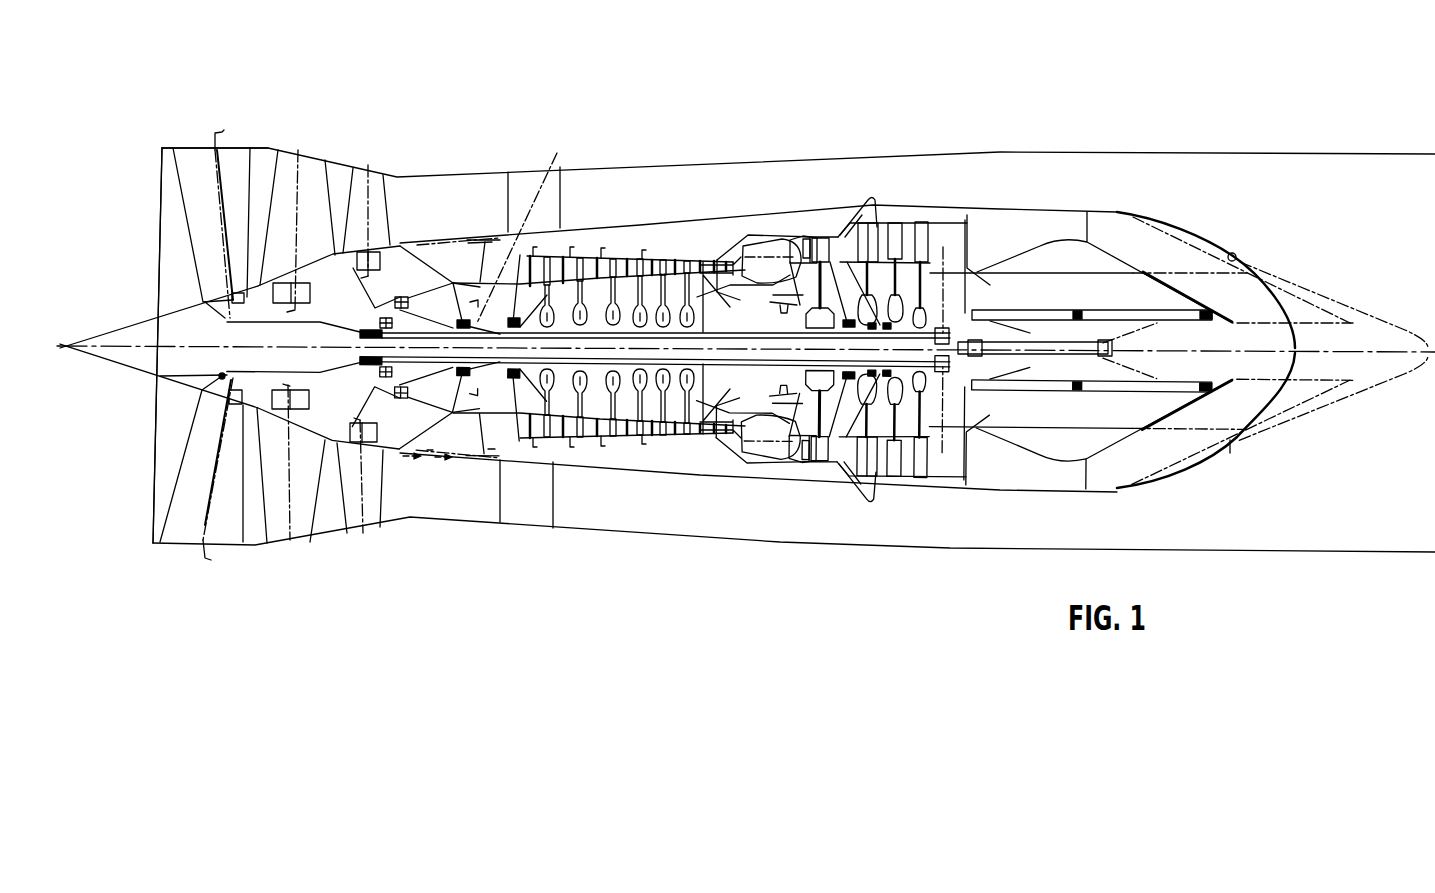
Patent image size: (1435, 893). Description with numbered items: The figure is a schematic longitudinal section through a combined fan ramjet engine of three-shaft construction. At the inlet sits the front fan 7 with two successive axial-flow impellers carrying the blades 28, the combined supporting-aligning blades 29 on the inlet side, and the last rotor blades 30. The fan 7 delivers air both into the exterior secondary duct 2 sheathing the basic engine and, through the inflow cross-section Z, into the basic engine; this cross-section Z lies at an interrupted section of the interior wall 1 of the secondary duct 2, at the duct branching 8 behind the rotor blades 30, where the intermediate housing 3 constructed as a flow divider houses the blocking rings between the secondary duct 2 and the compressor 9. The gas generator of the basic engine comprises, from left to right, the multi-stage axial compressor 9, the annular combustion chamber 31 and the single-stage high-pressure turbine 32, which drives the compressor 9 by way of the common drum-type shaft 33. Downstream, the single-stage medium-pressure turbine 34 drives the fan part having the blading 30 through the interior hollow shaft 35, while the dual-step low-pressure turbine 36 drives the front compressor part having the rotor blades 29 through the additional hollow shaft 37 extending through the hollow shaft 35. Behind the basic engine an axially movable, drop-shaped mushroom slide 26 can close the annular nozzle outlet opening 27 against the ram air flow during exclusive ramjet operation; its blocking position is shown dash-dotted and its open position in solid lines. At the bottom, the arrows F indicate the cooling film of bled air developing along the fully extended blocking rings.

The interior wall 1 is at (601, 229).
The exterior secondary duct 2 is at (785, 200).
The intermediate housing 3 is at (480, 238).
The front fan 7 is at (193, 131).
The duct branching 8 is at (441, 254).
The multi-stage axial compressor 9 is at (547, 447).
The mushroom-shaped slide 26 is at (1088, 240).
The annular nozzle outlet opening 27 is at (1238, 252).
The blades of the fan 28 is at (183, 533).
The combined supporting-aligning blades 29 is at (290, 514).
The rotor blades 30 is at (360, 509).
The annular combustion chamber 31 is at (760, 453).
The single-stage high-pressure turbine 32 is at (800, 497).
The common drum-type shaft 33 is at (816, 328).
The single-stage medium-pressure turbine 34 is at (875, 195).
The interior hollow shaft 35 is at (705, 262).
The dual-step low-pressure turbine 36 is at (893, 500).
The additional hollow shaft 37 is at (678, 440).
The inflow cross-section Z is at (428, 240).
The arrows F is at (390, 455).